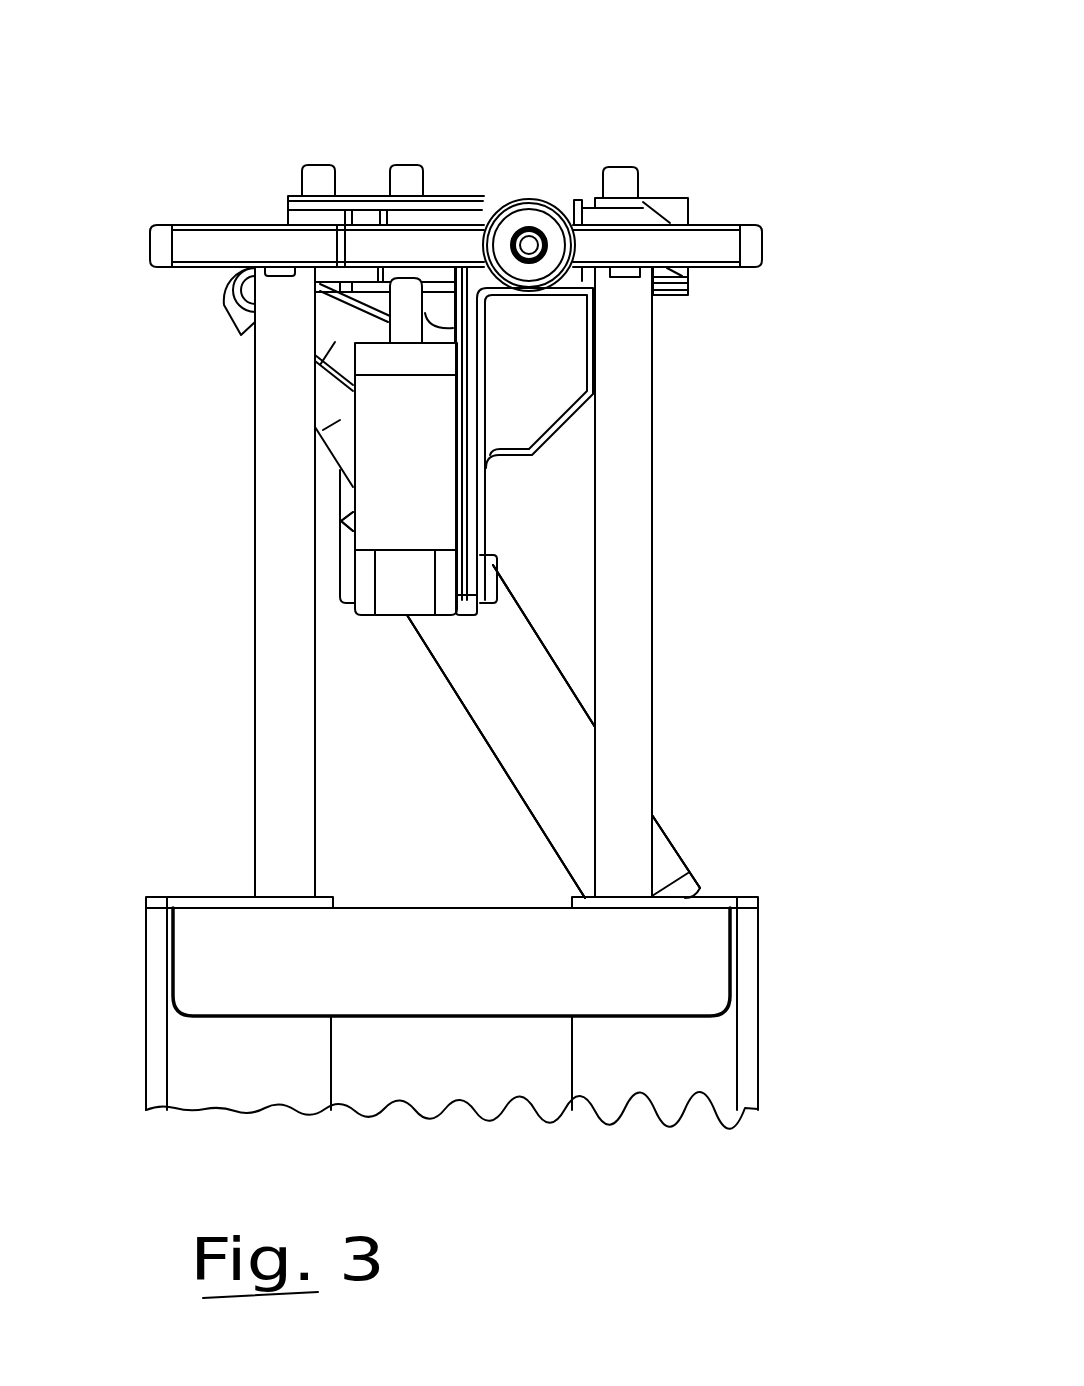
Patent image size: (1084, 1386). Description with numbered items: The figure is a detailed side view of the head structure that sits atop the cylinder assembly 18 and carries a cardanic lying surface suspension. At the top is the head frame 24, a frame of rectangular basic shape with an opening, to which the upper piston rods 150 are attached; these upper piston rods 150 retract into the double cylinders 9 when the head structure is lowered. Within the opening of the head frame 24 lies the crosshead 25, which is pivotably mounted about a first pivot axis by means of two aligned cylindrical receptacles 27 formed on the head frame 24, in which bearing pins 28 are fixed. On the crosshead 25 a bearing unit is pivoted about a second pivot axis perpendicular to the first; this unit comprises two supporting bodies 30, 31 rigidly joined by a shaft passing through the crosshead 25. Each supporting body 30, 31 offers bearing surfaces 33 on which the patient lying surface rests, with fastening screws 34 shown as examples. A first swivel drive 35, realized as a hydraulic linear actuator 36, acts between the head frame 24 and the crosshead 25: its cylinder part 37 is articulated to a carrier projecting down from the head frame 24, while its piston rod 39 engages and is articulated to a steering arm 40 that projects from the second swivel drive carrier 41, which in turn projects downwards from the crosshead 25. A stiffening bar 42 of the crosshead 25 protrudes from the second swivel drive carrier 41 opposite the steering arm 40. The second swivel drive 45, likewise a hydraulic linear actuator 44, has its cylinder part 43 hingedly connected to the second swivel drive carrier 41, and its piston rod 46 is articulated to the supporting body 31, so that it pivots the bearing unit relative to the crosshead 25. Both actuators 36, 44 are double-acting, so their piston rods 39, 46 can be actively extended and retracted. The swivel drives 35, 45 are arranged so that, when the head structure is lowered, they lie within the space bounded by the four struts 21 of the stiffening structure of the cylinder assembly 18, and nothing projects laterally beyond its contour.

The double cylinder 9 is at (676, 1090).
The cylinder assembly 18 is at (792, 1024).
The strut 21 is at (218, 930).
The head frame 24 is at (725, 240).
The crosshead 25 is at (576, 212).
The cylindrical receptacle 27 is at (492, 198).
The bearing pin 28 is at (540, 215).
The supporting body 30 is at (675, 205).
The supporting body 31 is at (290, 200).
The bearing surface 33 is at (357, 190).
The fastening screw 34 is at (310, 175).
The first swivel drive 35 is at (572, 636).
The hydraulic linear actuator 36 is at (553, 731).
The cylinder part 37 is at (555, 725).
The piston rod 39 is at (340, 421).
The steering arm 40 is at (335, 343).
The second swivel drive carrier 41 is at (470, 500).
The stiffening bar 42 is at (550, 385).
The cylinder part 43 is at (385, 470).
The hydraulic linear actuator 44 is at (333, 507).
The second swivel drive 45 is at (347, 521).
The piston rod 46 is at (400, 316).
The right pillar 150 is at (635, 578).